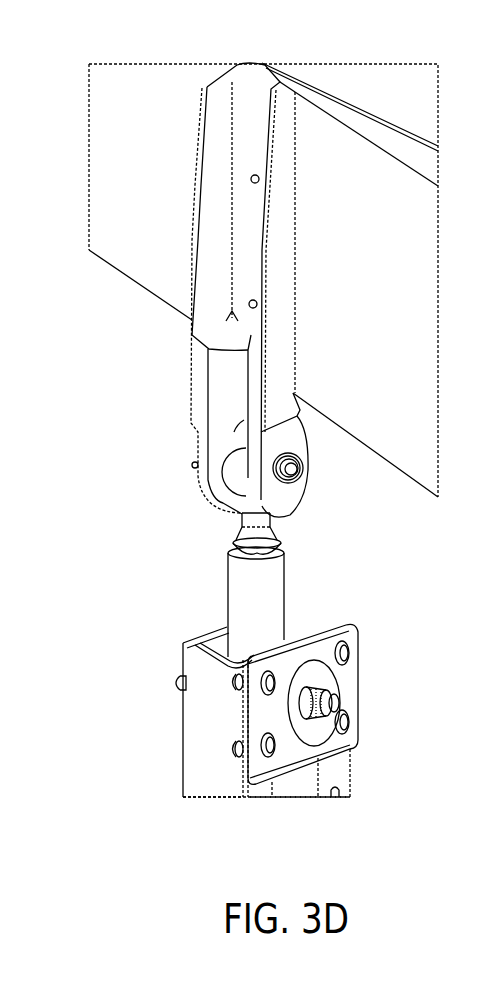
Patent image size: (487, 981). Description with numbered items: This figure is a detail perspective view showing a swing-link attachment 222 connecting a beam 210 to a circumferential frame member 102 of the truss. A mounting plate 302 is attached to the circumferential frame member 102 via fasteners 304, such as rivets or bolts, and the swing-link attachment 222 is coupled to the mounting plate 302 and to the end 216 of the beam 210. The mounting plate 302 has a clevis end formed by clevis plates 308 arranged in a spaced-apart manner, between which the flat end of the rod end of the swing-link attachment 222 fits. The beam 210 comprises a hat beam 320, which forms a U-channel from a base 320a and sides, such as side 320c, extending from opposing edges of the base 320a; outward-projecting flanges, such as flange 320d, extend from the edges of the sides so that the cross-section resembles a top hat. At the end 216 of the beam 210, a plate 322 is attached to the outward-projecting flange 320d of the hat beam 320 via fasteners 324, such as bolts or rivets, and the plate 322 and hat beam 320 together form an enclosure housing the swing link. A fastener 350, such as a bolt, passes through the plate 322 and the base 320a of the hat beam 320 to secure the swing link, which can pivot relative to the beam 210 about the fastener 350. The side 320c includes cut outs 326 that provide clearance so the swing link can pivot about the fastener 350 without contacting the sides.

The circumferential frame member 102 is at (408, 82).
The mounting plate 302 is at (237, 224).
The fasteners 304 is at (262, 181).
The clevis plates 308 is at (210, 496).
The fastener 350 is at (293, 469).
The swing-link attachment 222 is at (300, 552).
The base 320a is at (213, 630).
The end 216 is at (183, 643).
The cut outs 326 is at (296, 665).
The plate 322 is at (340, 691).
The fasteners 324 is at (355, 654).
The hat beam 320 is at (351, 792).
The outward-projecting flange 320d is at (307, 782).
The side 320c is at (210, 790).
The beam 210 is at (298, 797).